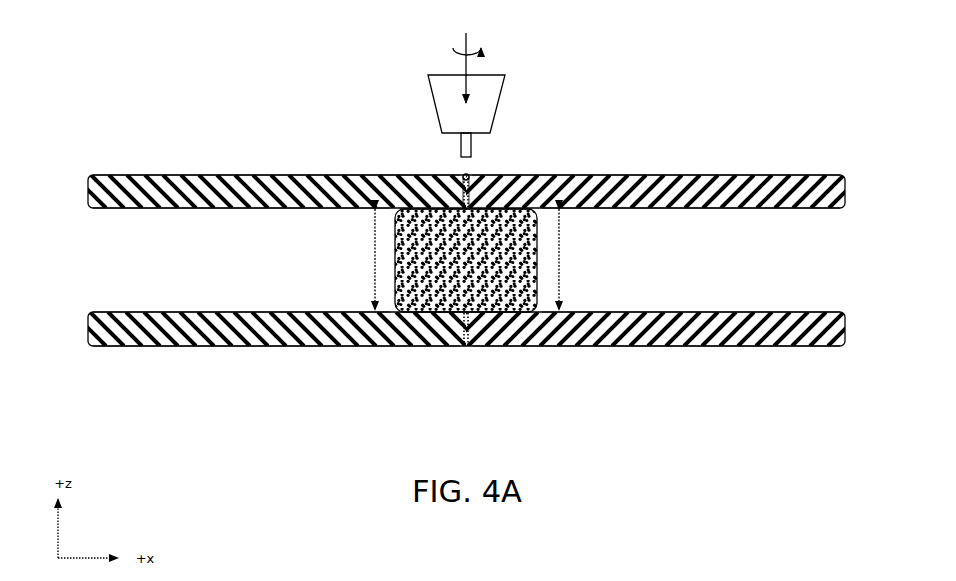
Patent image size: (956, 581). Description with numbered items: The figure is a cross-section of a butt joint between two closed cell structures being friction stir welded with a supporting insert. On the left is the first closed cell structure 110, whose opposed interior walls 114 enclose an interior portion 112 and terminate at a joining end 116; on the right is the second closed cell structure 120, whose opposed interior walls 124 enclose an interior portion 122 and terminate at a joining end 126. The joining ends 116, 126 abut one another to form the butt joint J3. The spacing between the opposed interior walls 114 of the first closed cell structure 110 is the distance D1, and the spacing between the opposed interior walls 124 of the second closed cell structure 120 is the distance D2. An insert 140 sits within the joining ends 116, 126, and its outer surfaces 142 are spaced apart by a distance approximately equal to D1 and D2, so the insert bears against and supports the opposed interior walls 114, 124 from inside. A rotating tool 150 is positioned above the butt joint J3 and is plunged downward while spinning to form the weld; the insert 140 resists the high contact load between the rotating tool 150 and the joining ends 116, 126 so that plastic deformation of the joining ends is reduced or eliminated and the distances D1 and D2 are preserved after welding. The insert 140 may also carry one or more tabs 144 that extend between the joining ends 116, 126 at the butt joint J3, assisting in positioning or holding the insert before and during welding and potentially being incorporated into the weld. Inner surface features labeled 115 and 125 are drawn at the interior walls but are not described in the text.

The first closed cell structure 110 is at (247, 153).
The interior portion 112 is at (150, 258).
The opposed interior walls 114 is at (178, 173).
The inner surface of first workpiece 115 is at (282, 311).
The joining end 116 is at (443, 170).
The second closed cell structure 120 is at (696, 158).
The interior portion 122 is at (822, 255).
The opposed interior walls 124 is at (763, 173).
The inner surface of second workpiece 125 is at (768, 311).
The joining end 126 is at (498, 172).
The insert 140 is at (393, 272).
The outer surfaces 142 is at (427, 212).
The tabs 144 is at (468, 348).
The rotating tool 150 is at (530, 70).
The butt joint J3 is at (460, 378).
The distance between opposed interior walls of first closed cell structure D1 is at (353, 259).
The distance between opposed interior walls of second closed cell structure D2 is at (580, 259).